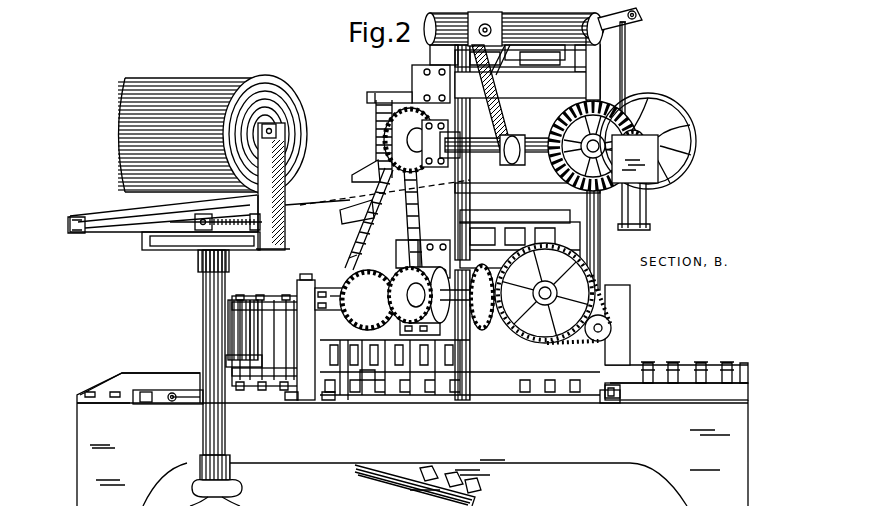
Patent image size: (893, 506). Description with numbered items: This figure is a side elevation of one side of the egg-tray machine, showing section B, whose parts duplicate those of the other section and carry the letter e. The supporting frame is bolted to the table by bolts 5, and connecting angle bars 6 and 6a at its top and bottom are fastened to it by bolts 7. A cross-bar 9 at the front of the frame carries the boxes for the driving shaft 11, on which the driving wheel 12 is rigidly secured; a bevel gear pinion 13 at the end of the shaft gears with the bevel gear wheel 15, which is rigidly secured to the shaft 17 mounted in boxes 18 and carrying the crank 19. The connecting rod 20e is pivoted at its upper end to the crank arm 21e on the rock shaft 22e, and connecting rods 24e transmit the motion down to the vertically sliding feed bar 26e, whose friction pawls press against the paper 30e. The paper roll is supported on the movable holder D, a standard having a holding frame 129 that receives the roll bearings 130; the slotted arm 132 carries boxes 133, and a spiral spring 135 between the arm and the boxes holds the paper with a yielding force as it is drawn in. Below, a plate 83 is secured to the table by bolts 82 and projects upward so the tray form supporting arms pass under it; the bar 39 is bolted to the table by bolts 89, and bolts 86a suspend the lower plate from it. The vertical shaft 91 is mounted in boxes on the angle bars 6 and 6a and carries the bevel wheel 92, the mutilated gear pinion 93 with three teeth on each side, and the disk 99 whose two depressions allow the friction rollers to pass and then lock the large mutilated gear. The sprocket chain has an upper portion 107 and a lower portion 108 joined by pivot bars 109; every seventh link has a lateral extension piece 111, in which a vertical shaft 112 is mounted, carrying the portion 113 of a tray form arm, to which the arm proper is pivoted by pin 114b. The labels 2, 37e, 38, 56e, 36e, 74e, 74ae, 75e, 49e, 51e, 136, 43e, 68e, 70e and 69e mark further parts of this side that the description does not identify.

The base 2 is at (77, 445).
The movable holder D is at (195, 80).
The roll bearings 130 is at (280, 108).
The paper 30e is at (130, 214).
The boxes 133 is at (68, 228).
The holding frame 129 is at (195, 234).
The spiral spring 135 is at (232, 226).
The slotted arm 132 is at (252, 232).
The upper portion of sprocket chain 107 is at (205, 305).
The pivot bars 109 is at (238, 333).
The lower portion of sprocket chain 108 is at (232, 362).
The plate 83 is at (100, 386).
The bolts 82 is at (80, 395).
The tray form arm portion 113 is at (163, 402).
The pin 114b is at (172, 402).
The bolts 86a is at (300, 278).
The bar 39 is at (307, 337).
The bar 37e is at (357, 299).
The bolt 38 is at (339, 294).
The sprocket 56e is at (368, 300).
The bolts 89 is at (290, 402).
The vertical shaft 112 is at (352, 378).
The lateral extension piece 111 is at (365, 372).
The bolts 7 is at (422, 68).
The block 36e is at (525, 400).
The bolts 5 is at (560, 398).
The connecting rod 20e is at (585, 72).
The connecting angle bar 6 is at (412, 92).
The roller 74e is at (515, 18).
The rock shaft 22e is at (620, 15).
The roller arm 74ae is at (640, 22).
The rod 75e is at (626, 70).
The crank arm 21e is at (535, 56).
The connecting rod 24e is at (504, 97).
The sprocket 49e is at (384, 130).
The vertical shaft 91 is at (375, 110).
The bevel wheel 92 is at (352, 172).
The mutilated gear pinion 93 is at (355, 218).
The disk 99 is at (383, 219).
The chain link 51e is at (348, 255).
The connecting angle bar 6a is at (398, 256).
The boxes 18 is at (450, 125).
The shaft 17 is at (474, 140).
The bearing 136 is at (472, 183).
The crank 19 is at (528, 160).
The bevel gear wheel 15 is at (560, 120).
The driving shaft 11 is at (680, 115).
The bevel gear pinion 13 is at (633, 130).
The driving wheel 12 is at (690, 162).
The cross-bar 9 is at (648, 210).
The gear 43e is at (419, 295).
The gear 68e is at (497, 343).
The feed-bar 26e is at (570, 255).
The pulley 70e is at (604, 326).
The chain 69e is at (578, 319).